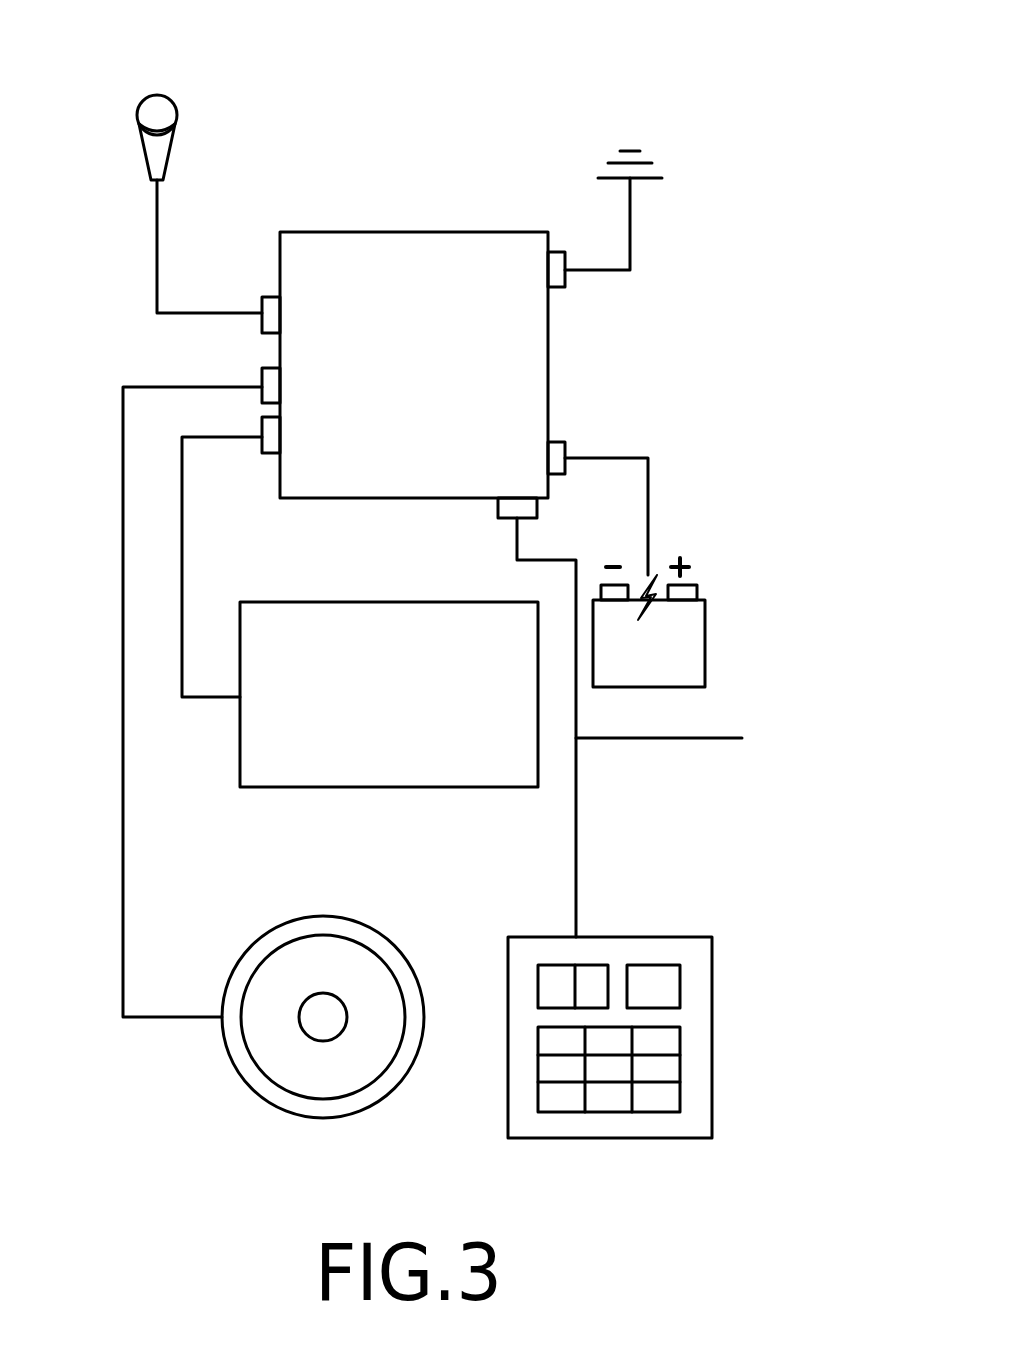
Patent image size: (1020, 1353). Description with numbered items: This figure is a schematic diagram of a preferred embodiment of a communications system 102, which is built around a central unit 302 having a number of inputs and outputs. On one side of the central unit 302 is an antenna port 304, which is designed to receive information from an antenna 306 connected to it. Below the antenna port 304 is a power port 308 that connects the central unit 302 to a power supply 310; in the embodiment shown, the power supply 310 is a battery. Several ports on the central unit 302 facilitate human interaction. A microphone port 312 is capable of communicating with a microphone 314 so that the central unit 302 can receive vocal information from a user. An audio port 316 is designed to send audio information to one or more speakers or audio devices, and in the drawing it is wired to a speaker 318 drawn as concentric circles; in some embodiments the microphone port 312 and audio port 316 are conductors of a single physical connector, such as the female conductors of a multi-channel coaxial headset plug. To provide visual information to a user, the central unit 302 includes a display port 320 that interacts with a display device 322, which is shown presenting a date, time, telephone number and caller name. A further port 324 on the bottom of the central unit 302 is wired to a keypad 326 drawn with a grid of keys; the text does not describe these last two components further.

The communications system 102 is at (427, 120).
The central unit 302 is at (455, 346).
The antenna port 304 is at (551, 290).
The antenna 306 is at (630, 226).
The power port 308 is at (567, 450).
The power supply 310 is at (705, 648).
The microphone port 312 is at (260, 305).
The microphone 314 is at (172, 150).
The audio port 316 is at (260, 376).
The speaker 318 is at (297, 1113).
The display port 320 is at (265, 456).
The display device 322 is at (442, 787).
The keypad connector 324 is at (513, 519).
The keypad 326 is at (712, 1005).